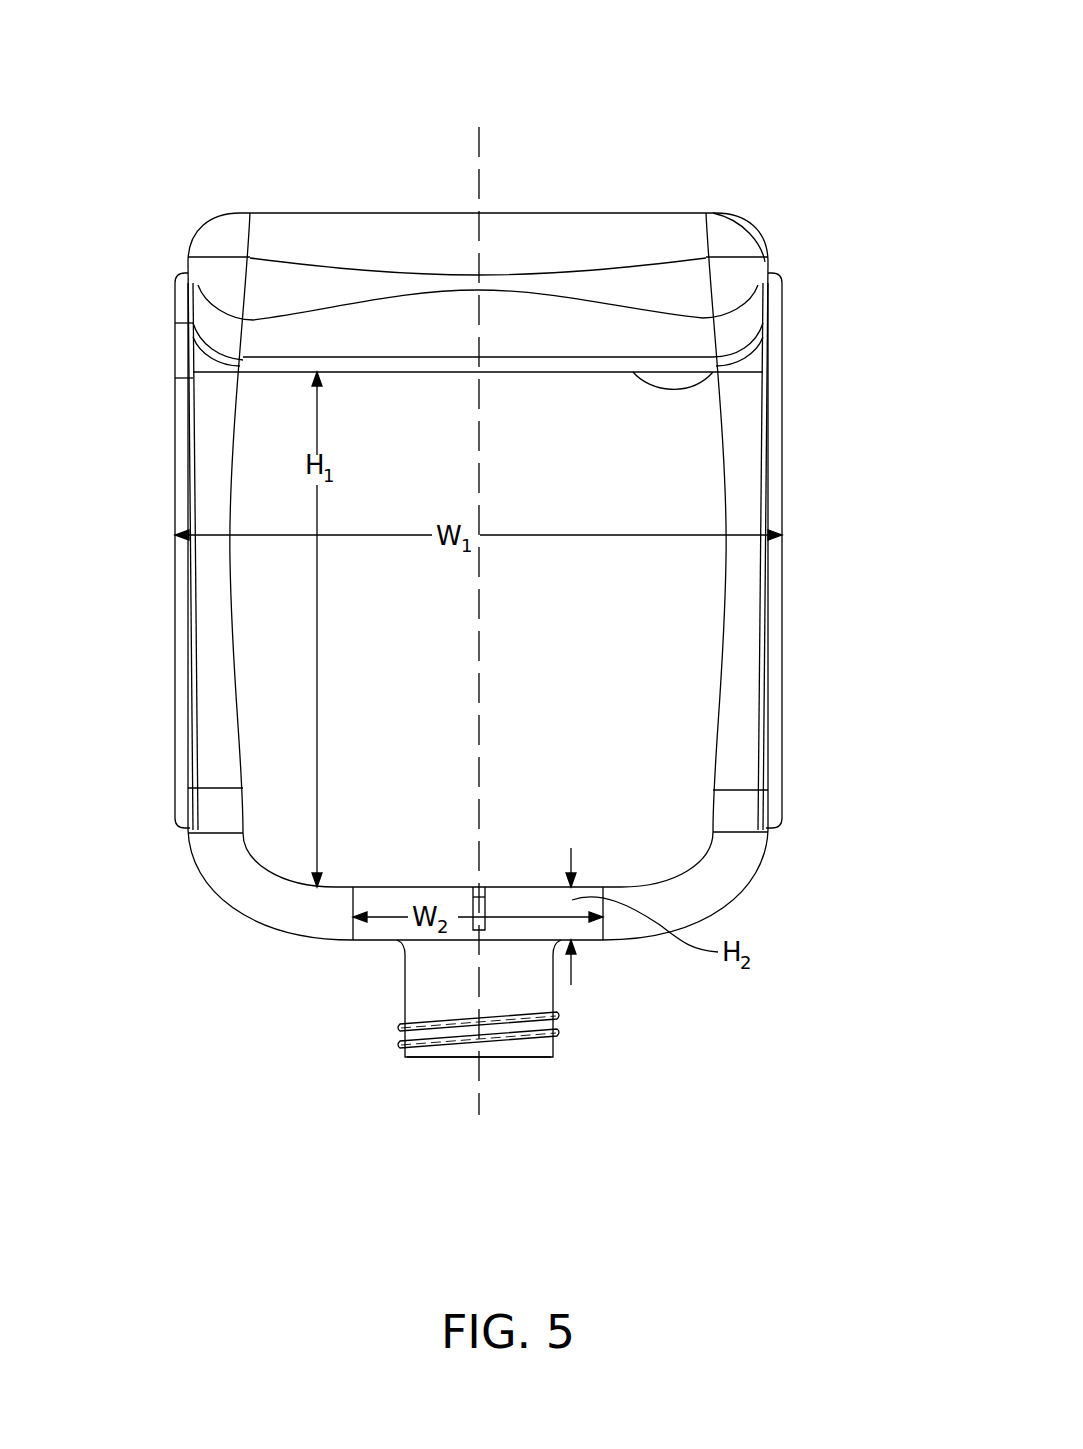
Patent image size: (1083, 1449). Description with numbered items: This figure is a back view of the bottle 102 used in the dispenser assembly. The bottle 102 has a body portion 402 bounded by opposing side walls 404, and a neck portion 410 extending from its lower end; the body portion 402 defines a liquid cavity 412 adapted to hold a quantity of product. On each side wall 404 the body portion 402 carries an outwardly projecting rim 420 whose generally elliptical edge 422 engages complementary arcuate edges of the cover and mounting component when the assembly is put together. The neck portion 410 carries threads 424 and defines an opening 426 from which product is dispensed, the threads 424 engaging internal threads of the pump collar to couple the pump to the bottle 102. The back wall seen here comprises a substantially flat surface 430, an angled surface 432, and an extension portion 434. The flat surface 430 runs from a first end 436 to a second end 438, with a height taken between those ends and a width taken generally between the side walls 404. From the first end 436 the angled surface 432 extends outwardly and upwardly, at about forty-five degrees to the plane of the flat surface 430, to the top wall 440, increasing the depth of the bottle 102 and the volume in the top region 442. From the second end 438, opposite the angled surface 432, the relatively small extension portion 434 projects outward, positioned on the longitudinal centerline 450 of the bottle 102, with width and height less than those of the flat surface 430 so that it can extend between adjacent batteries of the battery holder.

The bottle 102 is at (737, 80).
The body portion 402 is at (690, 498).
The side walls 404 is at (185, 378).
The neck portion 410 is at (603, 1012).
The cavity 412 is at (256, 592).
The outwardly projecting rim 420 is at (185, 568).
The generally elliptical edge 422 is at (180, 500).
The threads 424 is at (400, 1040).
The opening 426 is at (508, 1068).
The flat surface 430 is at (277, 782).
The angled surface 432 is at (262, 273).
The extension portion 434 is at (503, 895).
The first end 436 is at (778, 360).
The second end 438 is at (381, 885).
The top wall 440 is at (340, 213).
The top region 442 is at (733, 270).
The longitudinal centerline 450 is at (485, 140).